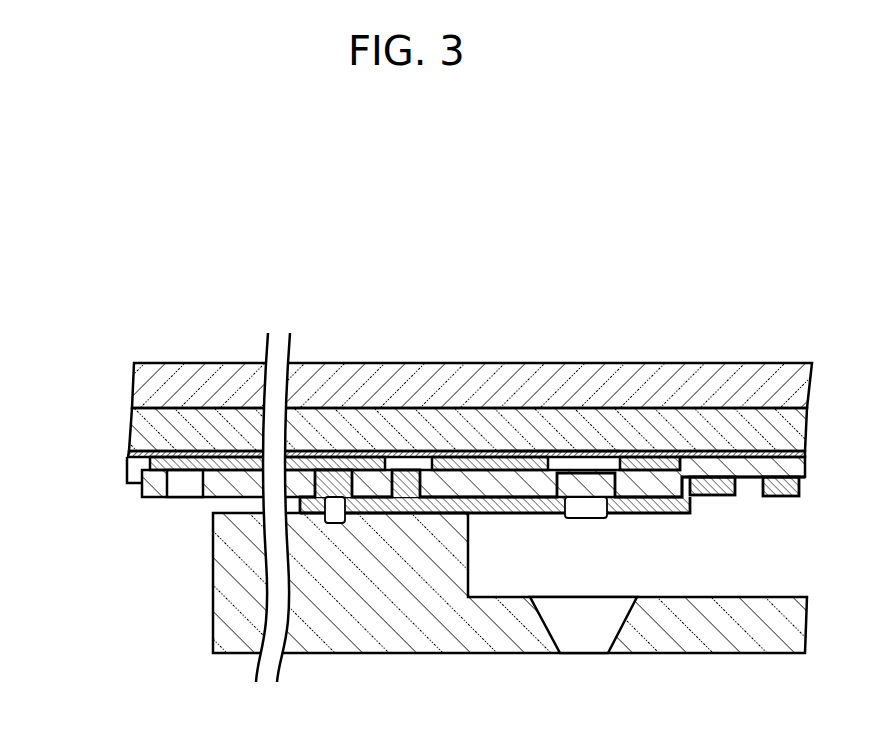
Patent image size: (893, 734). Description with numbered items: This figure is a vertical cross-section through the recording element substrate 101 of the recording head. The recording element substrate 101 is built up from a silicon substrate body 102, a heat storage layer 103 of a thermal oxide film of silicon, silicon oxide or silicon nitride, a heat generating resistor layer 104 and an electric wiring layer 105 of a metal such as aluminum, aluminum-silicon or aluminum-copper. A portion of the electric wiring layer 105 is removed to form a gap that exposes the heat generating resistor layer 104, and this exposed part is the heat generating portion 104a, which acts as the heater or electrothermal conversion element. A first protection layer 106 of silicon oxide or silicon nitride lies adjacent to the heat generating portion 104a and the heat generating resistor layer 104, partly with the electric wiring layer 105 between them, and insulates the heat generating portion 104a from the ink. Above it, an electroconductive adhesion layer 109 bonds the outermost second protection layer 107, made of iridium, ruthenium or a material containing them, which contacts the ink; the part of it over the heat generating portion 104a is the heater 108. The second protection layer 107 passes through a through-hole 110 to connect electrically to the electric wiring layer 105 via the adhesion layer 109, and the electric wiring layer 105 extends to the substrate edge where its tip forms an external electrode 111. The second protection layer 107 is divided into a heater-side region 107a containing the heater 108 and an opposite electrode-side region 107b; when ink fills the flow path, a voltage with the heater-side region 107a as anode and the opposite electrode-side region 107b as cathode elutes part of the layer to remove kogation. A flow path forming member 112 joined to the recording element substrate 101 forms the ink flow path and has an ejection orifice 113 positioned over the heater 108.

The recording element substrate 101 is at (407, 428).
The silicon substrate body 102 is at (438, 385).
The heat storage layer 103 is at (150, 432).
The heat generating resistor layer 104 is at (435, 388).
The heat generating portion 104a is at (560, 456).
The electric wiring layer 105 is at (150, 465).
The first protection layer 106 is at (435, 497).
The second protection layer 107 is at (552, 531).
The heater-side region 107a is at (650, 513).
The opposite electrode-side region 107b is at (766, 516).
The heater 108 is at (565, 519).
The adhesion layer 109 is at (778, 477).
The through-hole 110 is at (325, 524).
The external electrode 111 is at (203, 500).
The flow path forming member 112 is at (420, 633).
The ejection orifice 113 is at (550, 662).